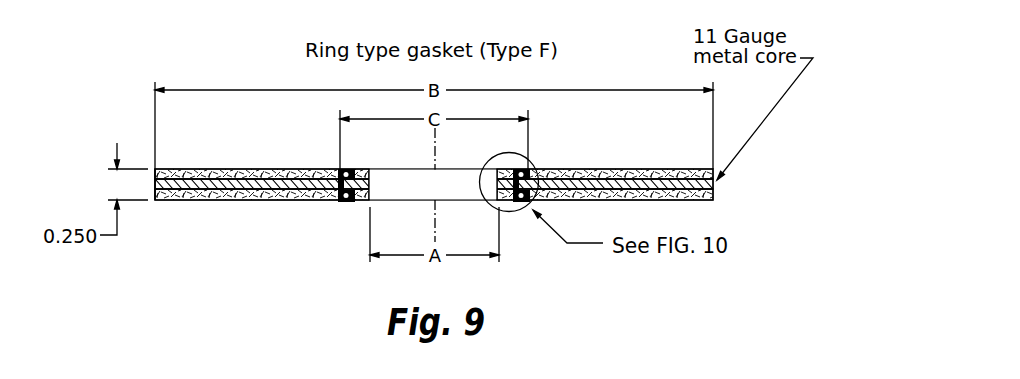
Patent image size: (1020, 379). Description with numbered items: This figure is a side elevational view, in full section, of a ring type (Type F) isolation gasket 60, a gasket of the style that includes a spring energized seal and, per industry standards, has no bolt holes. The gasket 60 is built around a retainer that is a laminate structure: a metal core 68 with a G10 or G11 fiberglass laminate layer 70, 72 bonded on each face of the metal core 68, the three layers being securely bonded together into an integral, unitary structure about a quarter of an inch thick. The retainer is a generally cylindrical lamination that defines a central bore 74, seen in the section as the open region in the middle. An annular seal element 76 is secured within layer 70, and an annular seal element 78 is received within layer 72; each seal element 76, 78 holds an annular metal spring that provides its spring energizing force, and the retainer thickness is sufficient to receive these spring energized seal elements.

The isolation gasket 60 is at (618, 143).
The metal core 68 is at (155, 187).
The fiberglass laminate layer 70 is at (658, 170).
The fiberglass laminate layer 72 is at (680, 201).
The central bore 74 is at (424, 173).
The annular seal element 76 is at (521, 170).
The annular seal element 78 is at (527, 202).